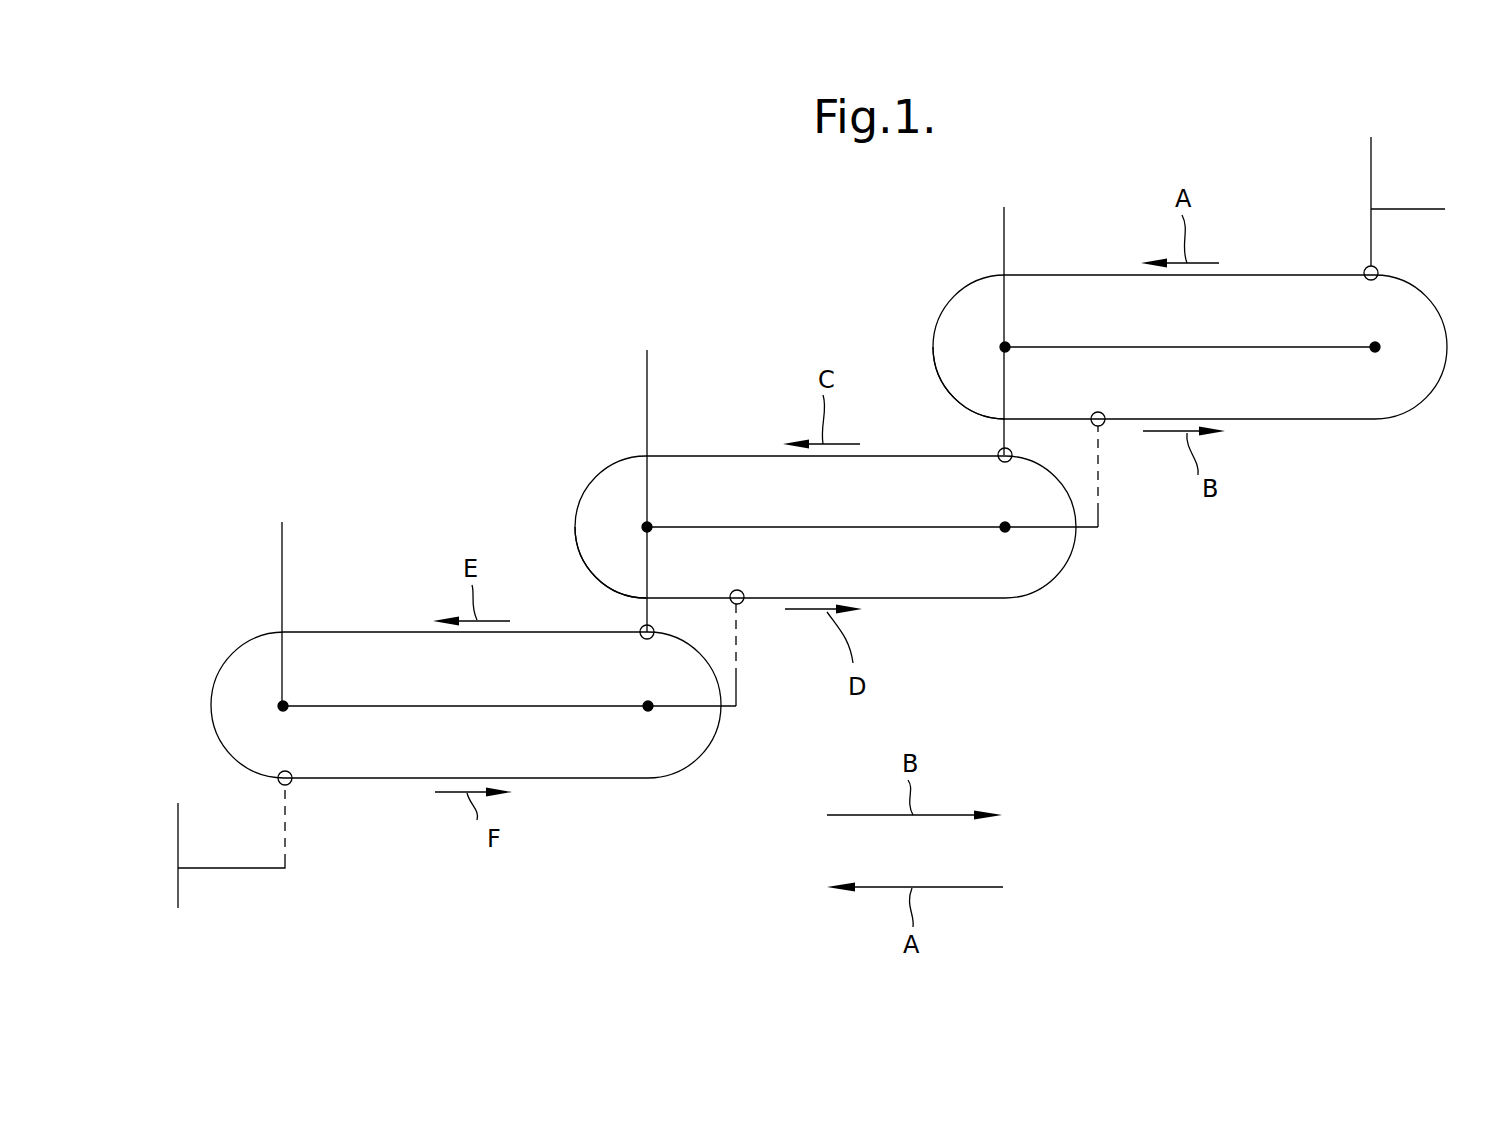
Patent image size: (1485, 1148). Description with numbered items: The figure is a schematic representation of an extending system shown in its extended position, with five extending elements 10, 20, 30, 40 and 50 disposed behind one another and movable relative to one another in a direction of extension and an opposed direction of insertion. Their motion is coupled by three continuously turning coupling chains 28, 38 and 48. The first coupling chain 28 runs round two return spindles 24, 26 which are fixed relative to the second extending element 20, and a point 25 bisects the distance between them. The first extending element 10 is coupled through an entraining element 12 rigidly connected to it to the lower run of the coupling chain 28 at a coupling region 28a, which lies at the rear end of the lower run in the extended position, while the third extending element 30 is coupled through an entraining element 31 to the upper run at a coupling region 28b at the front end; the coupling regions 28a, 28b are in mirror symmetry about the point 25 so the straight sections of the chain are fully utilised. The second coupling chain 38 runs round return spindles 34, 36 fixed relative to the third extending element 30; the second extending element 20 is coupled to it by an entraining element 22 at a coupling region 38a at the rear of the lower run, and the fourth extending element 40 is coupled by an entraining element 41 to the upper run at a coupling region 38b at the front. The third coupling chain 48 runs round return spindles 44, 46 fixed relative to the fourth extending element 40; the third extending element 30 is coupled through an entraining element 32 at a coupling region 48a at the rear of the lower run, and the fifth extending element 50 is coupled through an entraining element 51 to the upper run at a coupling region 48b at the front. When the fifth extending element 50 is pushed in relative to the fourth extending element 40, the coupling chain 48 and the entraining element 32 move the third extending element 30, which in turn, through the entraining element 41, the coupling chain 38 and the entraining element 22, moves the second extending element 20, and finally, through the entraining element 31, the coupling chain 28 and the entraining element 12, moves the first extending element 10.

The first extending element 10 is at (178, 890).
The entraining element 12 is at (273, 869).
The second extending element 20 is at (283, 558).
The entraining element 22 is at (738, 668).
The return spindle 24 is at (283, 706).
The point 25 is at (503, 707).
The return spindle 26 is at (648, 706).
The first coupling chain 28 is at (407, 780).
The coupling region 28a is at (290, 783).
The coupling region 28b is at (641, 628).
The third extending element 30 is at (647, 393).
The entraining element 31 is at (647, 575).
The entraining element 32 is at (1100, 495).
The return spindle 34 is at (647, 527).
The return spindle 36 is at (1005, 527).
The second coupling chain 38 is at (977, 598).
The coupling region 38a is at (742, 602).
The coupling region 38b is at (1000, 451).
The fourth extending element 40 is at (1004, 235).
The entraining element 41 is at (1000, 390).
The return spindle 44 is at (1005, 348).
The return spindle 46 is at (1375, 347).
The third coupling chain 48 is at (1340, 420).
The coupling region 48a is at (1102, 424).
The coupling region 48b is at (1367, 268).
The fifth extending element 50 is at (1370, 160).
The entraining element 51 is at (1372, 227).